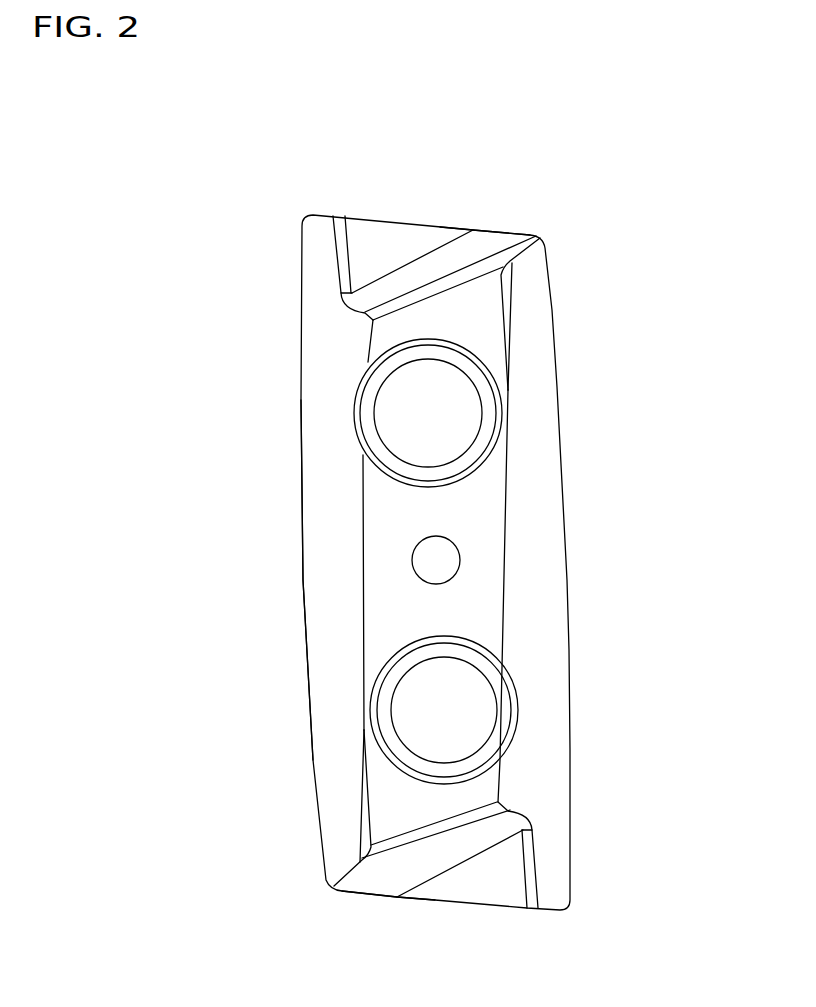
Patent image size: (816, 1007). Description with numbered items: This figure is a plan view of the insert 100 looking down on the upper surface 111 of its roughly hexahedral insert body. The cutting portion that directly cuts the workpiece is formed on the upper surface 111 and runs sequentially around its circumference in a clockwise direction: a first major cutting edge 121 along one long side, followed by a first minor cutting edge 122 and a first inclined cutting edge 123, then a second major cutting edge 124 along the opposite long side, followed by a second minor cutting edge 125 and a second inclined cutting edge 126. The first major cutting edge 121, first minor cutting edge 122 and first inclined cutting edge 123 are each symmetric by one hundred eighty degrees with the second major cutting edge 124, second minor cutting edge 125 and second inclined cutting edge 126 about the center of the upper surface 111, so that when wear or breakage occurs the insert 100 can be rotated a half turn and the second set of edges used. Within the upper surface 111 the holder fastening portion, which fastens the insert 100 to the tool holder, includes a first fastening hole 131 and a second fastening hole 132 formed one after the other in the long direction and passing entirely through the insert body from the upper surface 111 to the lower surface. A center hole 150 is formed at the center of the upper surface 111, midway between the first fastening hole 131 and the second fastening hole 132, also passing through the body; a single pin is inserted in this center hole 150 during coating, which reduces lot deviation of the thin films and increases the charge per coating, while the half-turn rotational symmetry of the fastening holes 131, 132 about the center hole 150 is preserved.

The insert 100 is at (588, 178).
The upper surface 111 is at (488, 495).
The first major cutting edge 121 is at (570, 647).
The first minor cutting edge 122 is at (545, 912).
The first inclined cutting edge 123 is at (433, 903).
The second major cutting edge 124 is at (303, 550).
The second minor cutting edge 125 is at (323, 213).
The second inclined cutting edge 126 is at (457, 228).
The first fastening hole 131 is at (450, 725).
The second fastening hole 132 is at (445, 416).
The center hole 150 is at (446, 569).